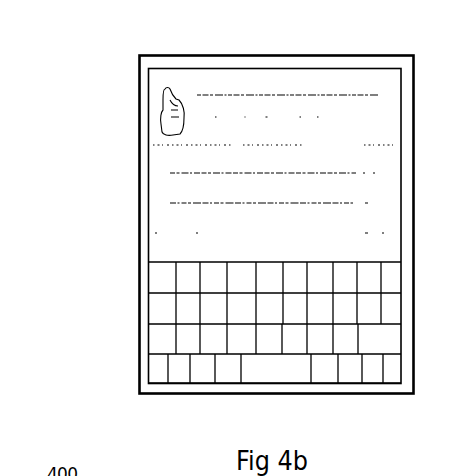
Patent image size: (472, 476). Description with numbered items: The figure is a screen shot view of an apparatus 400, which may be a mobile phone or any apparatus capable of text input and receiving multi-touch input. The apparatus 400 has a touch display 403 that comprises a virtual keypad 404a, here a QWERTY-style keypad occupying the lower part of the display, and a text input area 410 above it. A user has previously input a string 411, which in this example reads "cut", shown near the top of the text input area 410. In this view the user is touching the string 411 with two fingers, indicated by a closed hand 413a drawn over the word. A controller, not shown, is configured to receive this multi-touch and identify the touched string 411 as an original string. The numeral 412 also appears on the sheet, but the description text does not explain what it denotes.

The apparatus 400 is at (118, 72).
The touch display 403 is at (139, 242).
The text input area 410 is at (160, 172).
The string 411 is at (163, 83).
The closed hand 413a is at (160, 113).
The virtual keypad 404a is at (148, 302).
The reference 412 is at (183, 465).